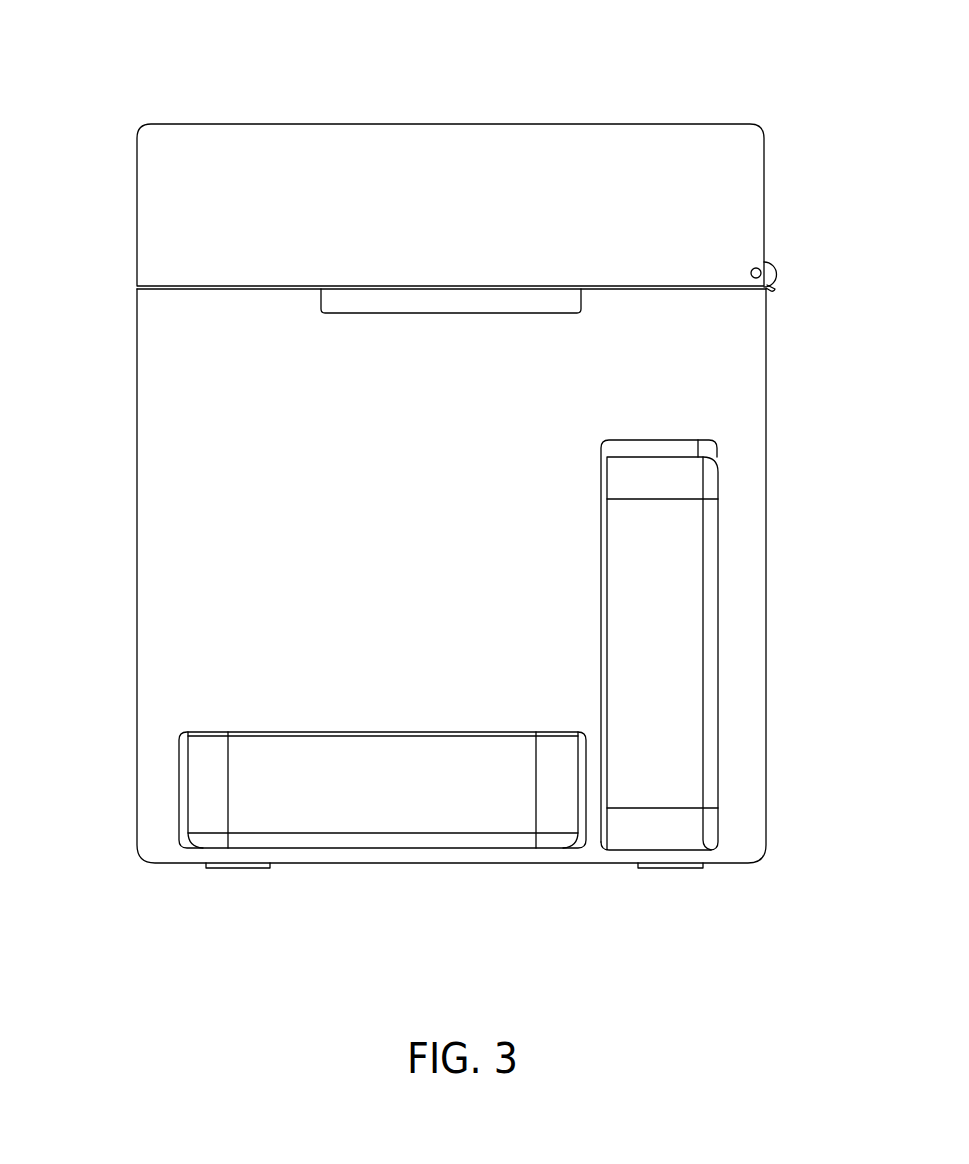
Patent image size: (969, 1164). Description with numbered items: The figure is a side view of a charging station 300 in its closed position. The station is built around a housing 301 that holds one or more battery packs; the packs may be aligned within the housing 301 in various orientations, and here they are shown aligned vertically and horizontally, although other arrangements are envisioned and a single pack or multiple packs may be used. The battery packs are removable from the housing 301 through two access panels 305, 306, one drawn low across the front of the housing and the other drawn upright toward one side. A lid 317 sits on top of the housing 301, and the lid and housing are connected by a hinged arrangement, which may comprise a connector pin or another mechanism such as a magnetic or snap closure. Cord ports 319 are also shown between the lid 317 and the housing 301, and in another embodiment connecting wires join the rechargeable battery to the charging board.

The charging station 300 is at (713, 72).
The lid 317 is at (200, 213).
The housing 301 is at (190, 390).
The cord ports 319 is at (502, 298).
The access panel 305 is at (263, 805).
The access panel 306 is at (659, 682).